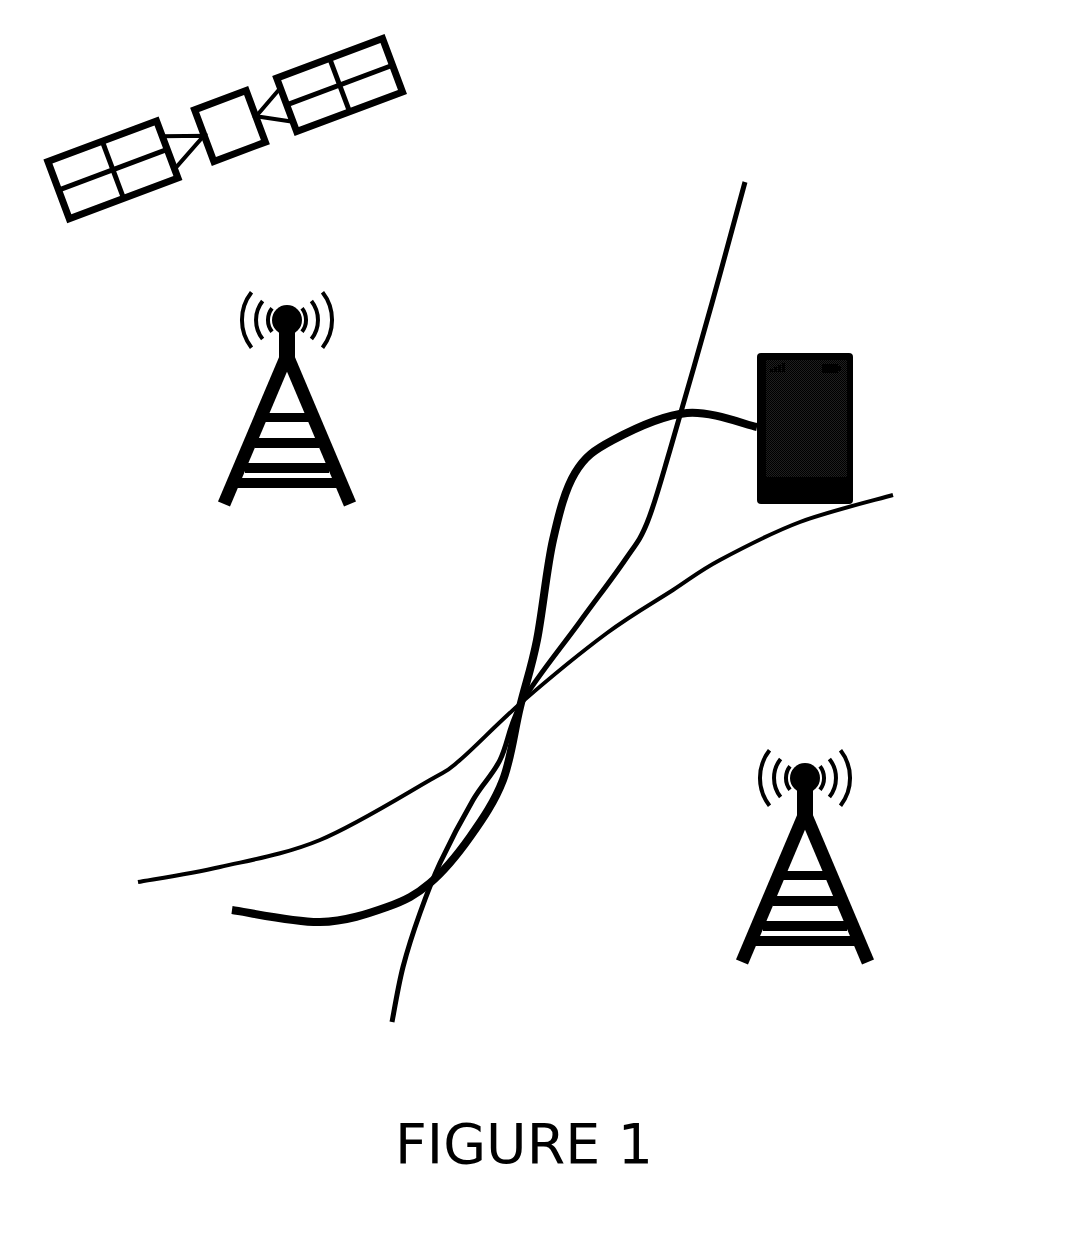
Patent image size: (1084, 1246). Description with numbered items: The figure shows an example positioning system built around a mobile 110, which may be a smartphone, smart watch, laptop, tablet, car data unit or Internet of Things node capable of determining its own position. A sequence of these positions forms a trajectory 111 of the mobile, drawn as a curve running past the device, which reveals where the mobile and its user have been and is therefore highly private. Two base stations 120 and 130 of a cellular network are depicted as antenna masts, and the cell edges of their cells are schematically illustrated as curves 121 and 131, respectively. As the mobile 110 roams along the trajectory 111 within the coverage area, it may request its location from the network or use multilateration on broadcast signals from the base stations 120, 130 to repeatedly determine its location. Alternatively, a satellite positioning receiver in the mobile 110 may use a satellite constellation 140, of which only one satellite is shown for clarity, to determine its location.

The mobile 110 is at (802, 352).
The trajectory 111 is at (272, 918).
The base station 120 is at (247, 443).
The curve 121 is at (722, 262).
The base station 130 is at (853, 913).
The curve 131 is at (877, 502).
The satellite constellation 140 is at (222, 100).